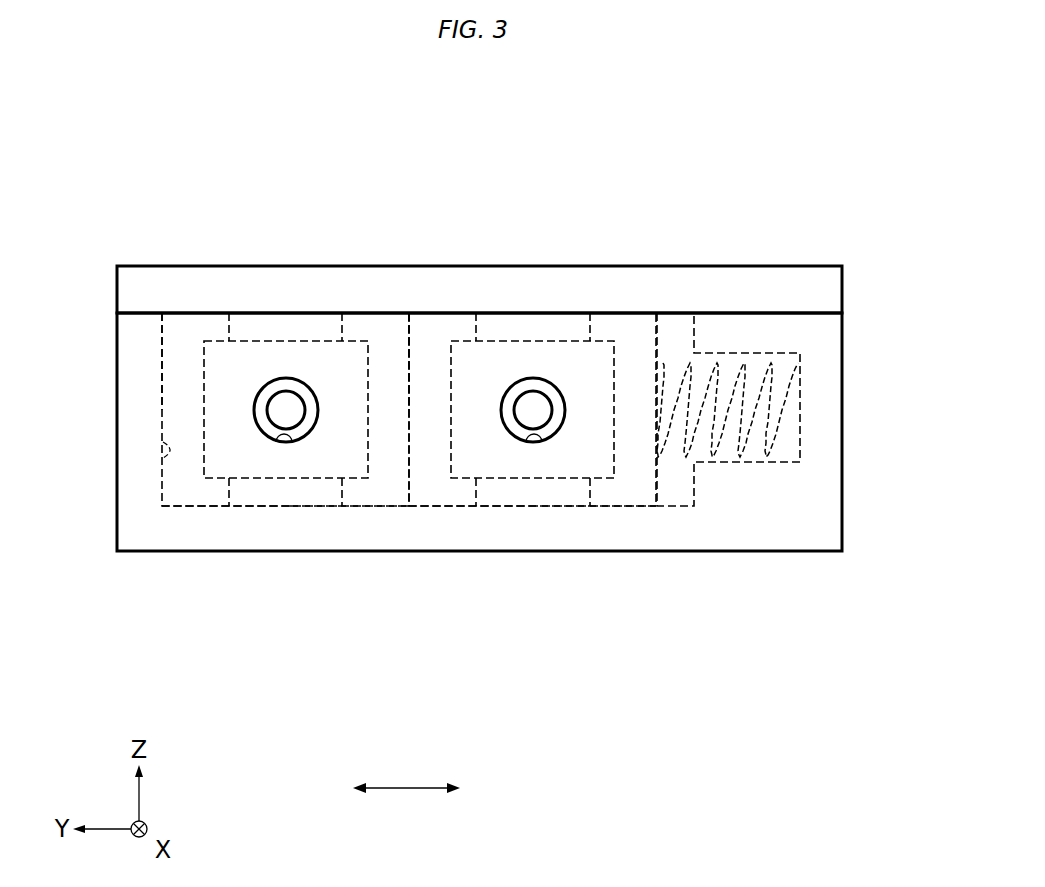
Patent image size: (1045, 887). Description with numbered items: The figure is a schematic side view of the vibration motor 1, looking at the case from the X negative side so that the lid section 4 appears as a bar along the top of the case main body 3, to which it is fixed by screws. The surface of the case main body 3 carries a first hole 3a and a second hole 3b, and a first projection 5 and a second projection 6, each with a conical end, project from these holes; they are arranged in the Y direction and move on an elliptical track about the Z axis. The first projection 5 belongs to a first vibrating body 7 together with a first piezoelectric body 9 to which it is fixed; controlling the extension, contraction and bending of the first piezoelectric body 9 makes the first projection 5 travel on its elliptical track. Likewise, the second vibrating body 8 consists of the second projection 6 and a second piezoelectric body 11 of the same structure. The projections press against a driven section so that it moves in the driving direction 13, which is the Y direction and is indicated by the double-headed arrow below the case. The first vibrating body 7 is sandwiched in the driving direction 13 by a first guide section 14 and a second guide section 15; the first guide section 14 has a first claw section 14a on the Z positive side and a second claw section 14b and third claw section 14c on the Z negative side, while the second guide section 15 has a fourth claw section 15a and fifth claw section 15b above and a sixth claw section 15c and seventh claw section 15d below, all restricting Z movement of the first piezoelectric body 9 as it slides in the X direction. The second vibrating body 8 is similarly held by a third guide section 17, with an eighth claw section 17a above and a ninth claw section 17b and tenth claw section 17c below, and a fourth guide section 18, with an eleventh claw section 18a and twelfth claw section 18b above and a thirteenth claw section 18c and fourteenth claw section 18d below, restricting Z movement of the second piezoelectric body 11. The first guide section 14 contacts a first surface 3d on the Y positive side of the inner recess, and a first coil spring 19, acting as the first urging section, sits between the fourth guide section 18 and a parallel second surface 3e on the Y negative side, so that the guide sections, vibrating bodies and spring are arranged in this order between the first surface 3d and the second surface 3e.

The vibration motor 1 is at (506, 354).
The case main body 3 is at (808, 535).
The first hole 3a is at (275, 442).
The second hole 3b is at (524, 442).
The first surface 3d is at (163, 458).
The second surface 3e is at (798, 450).
The lid section 4 is at (810, 282).
The first projection 5 is at (287, 410).
The second projection 6 is at (533, 410).
The first vibrating body 7 is at (338, 150).
The second vibrating body 8 is at (588, 150).
The first piezoelectric body 9 is at (324, 365).
The second piezoelectric body 11 is at (570, 365).
The driving direction 13 is at (407, 790).
The first guide section 14 is at (178, 393).
The first claw section 14a is at (208, 327).
The second claw section 14b is at (214, 495).
The third claw section 14c is at (210, 630).
The second guide section 15 is at (385, 423).
The fourth claw section 15a is at (356, 328).
The fifth claw section 15b is at (356, 328).
The sixth claw section 15c is at (357, 495).
The seventh claw section 15d is at (337, 630).
The third guide section 17 is at (430, 422).
The eighth claw section 17a is at (463, 328).
The ninth claw section 17b is at (465, 495).
The tenth claw section 17c is at (462, 630).
The fourth guide section 18 is at (638, 423).
The eleventh claw section 18a is at (602, 328).
The twelfth claw section 18b is at (602, 328).
The thirteenth claw section 18c is at (603, 495).
The fourteenth claw section 18d is at (602, 630).
The first coil spring 19 is at (787, 378).